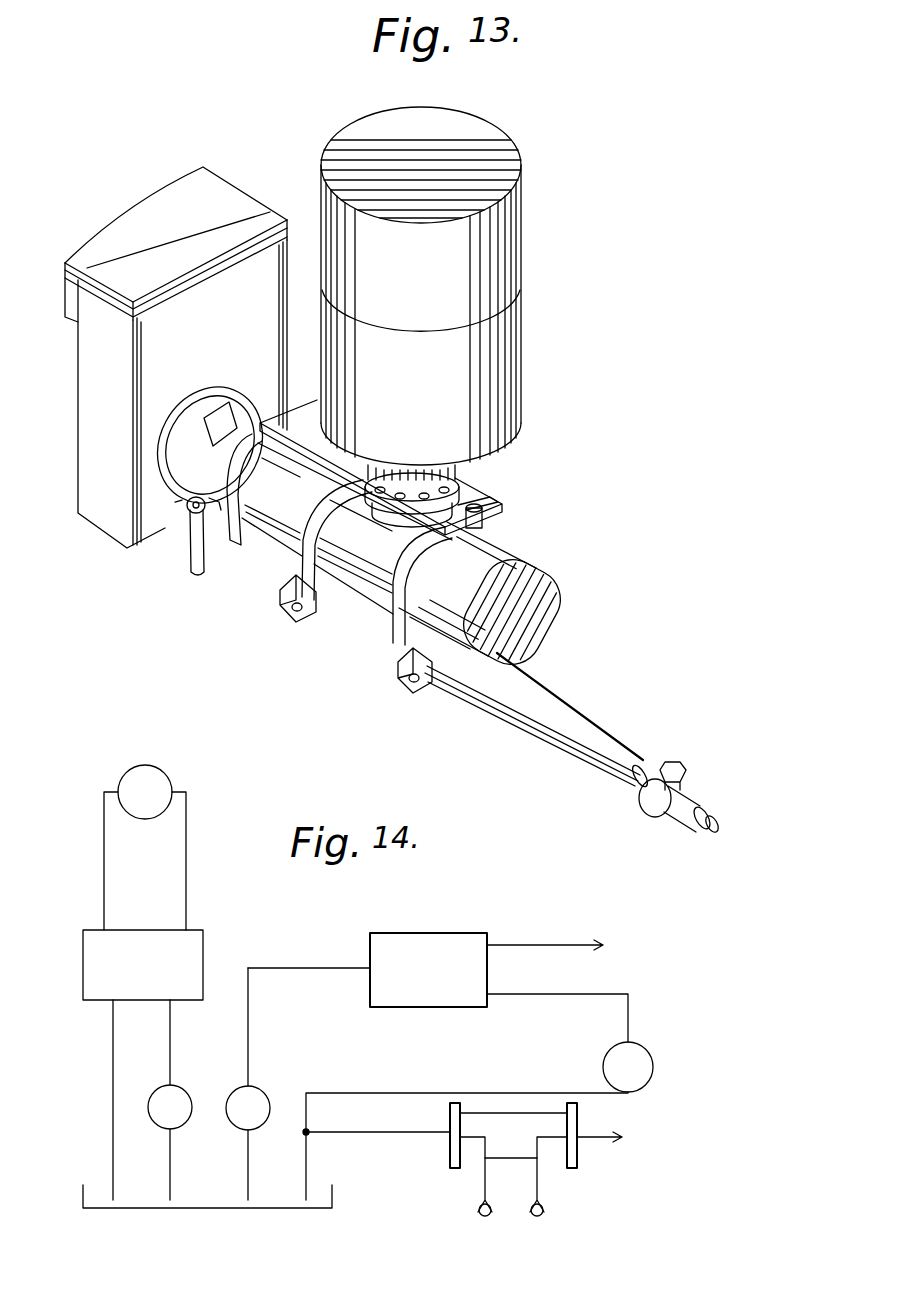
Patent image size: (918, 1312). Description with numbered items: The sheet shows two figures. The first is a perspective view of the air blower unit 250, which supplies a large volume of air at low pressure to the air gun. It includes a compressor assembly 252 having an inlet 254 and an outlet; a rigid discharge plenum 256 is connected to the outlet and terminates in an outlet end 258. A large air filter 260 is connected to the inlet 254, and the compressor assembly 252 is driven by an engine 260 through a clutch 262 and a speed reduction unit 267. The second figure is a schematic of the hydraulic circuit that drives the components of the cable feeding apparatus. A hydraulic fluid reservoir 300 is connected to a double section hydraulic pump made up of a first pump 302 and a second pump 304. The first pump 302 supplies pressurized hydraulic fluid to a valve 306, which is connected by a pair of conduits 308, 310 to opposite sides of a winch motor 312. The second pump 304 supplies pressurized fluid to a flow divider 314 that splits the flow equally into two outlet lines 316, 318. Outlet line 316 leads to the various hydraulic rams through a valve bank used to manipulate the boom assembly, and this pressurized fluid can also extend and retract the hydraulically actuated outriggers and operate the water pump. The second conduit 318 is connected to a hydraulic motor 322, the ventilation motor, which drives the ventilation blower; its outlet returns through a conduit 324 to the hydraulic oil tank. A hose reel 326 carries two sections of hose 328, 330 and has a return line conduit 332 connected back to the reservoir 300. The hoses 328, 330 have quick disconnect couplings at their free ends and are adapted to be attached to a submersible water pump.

In FIG. 13, the air blower unit 250 is at (642, 279).
In FIG. 13, the compressor assembly 252 is at (535, 540).
In FIG. 13, the inlet 254 is at (470, 503).
In FIG. 13, the rigid discharge plenum 256 is at (523, 715).
In FIG. 13, the outlet end 258 is at (710, 800).
In FIG. 13, the air filter / engine 260 is at (185, 186).
In FIG. 13, the clutch 262 is at (183, 505).
In FIG. 13, the speed reduction unit 267 is at (268, 533).
In FIG. 14, the hydraulic fluid reservoir 300 is at (145, 1208).
In FIG. 14, the first pump 302 is at (182, 1092).
In FIG. 14, the second pump 304 is at (235, 1118).
In FIG. 14, the valve 306 is at (100, 967).
In FIG. 14, the conduit 308 is at (187, 835).
In FIG. 14, the conduit 310 is at (104, 872).
In FIG. 14, the winch motor 312 is at (122, 783).
In FIG. 14, the flow divider 314 is at (385, 935).
In FIG. 14, the outlet line 316 is at (518, 943).
In FIG. 14, the second conduit 318 is at (502, 995).
In FIG. 14, the hydraulic motor 322 is at (603, 1067).
In FIG. 14, the conduit 324 is at (438, 1092).
In FIG. 14, the hose reel 326 is at (450, 1115).
In FIG. 14, the hose 328 is at (537, 1178).
In FIG. 14, the hose 330 is at (485, 1188).
In FIG. 14, the return line conduit 332 is at (362, 1133).